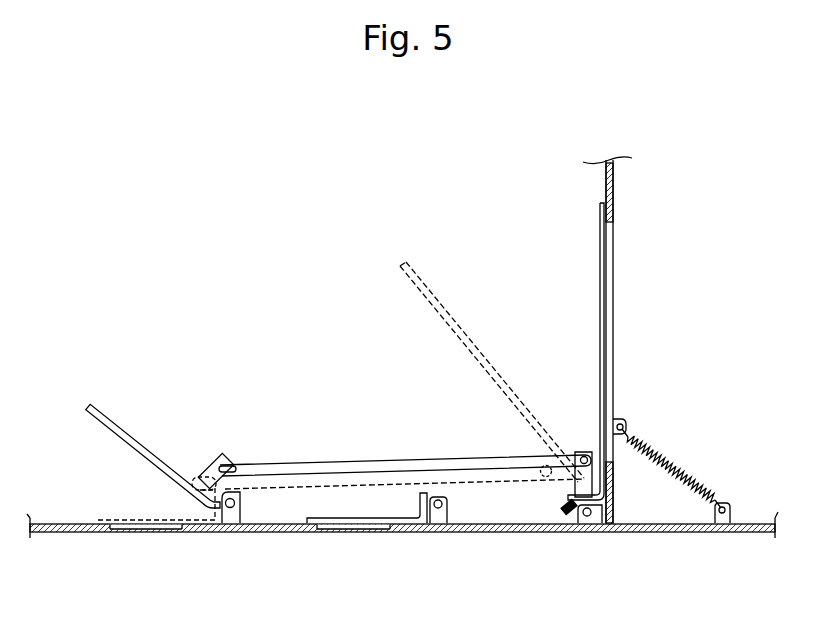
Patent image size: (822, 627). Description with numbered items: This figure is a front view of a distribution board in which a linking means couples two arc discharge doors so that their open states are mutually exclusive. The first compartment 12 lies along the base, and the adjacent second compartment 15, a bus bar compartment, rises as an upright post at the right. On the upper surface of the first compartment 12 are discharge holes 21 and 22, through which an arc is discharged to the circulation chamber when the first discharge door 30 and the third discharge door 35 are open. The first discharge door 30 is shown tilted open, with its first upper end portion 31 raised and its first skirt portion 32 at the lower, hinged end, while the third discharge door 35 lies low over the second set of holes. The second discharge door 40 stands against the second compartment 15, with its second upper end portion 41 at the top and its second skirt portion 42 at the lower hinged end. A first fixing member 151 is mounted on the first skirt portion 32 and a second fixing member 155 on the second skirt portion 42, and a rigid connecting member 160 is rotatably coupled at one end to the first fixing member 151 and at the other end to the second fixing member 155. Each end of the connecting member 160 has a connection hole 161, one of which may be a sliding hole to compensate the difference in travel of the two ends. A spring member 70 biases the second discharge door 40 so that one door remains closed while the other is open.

The first compartment 12 is at (480, 533).
The second compartment 15 is at (618, 190).
The discharge holes 21 is at (118, 530).
The discharge holes 22 is at (318, 529).
The first discharge door 30 is at (153, 424).
The first upper end portion 31 is at (108, 412).
The first skirt portion 32 is at (243, 494).
The third discharge door 35 is at (368, 512).
The second discharge door 40 is at (598, 303).
The second upper end portion 41 is at (600, 250).
The second skirt portion 42 is at (598, 523).
The spring member 70 is at (682, 467).
The first fixing member 151 is at (244, 432).
The second fixing member 155 is at (587, 453).
The connecting member 160 is at (380, 458).
The connection hole 161 is at (238, 458).